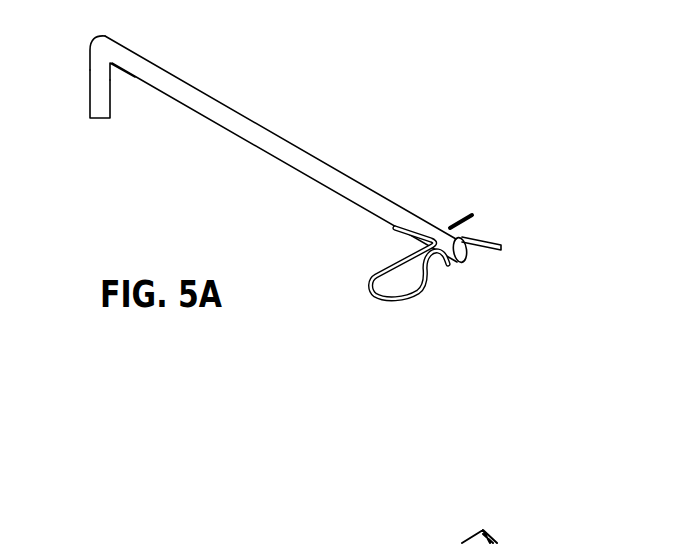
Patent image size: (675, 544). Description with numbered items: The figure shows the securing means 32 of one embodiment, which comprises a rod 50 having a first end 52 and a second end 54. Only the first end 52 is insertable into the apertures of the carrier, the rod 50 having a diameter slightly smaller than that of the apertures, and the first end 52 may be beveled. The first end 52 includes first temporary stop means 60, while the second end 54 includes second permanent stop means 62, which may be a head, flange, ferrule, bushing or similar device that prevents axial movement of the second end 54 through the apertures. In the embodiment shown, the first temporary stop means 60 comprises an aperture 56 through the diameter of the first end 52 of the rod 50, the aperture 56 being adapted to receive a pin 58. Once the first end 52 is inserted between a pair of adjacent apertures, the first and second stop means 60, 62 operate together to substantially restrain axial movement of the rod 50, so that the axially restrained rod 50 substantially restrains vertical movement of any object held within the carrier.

The rod 50 is at (203, 91).
The securing means 32 is at (307, 175).
The second end 54 is at (155, 67).
The second permanent stop means 62 is at (105, 120).
The first end 52 is at (462, 263).
The aperture 56 is at (396, 228).
The pin 58 is at (493, 253).
The first temporary stop means 60 is at (480, 236).